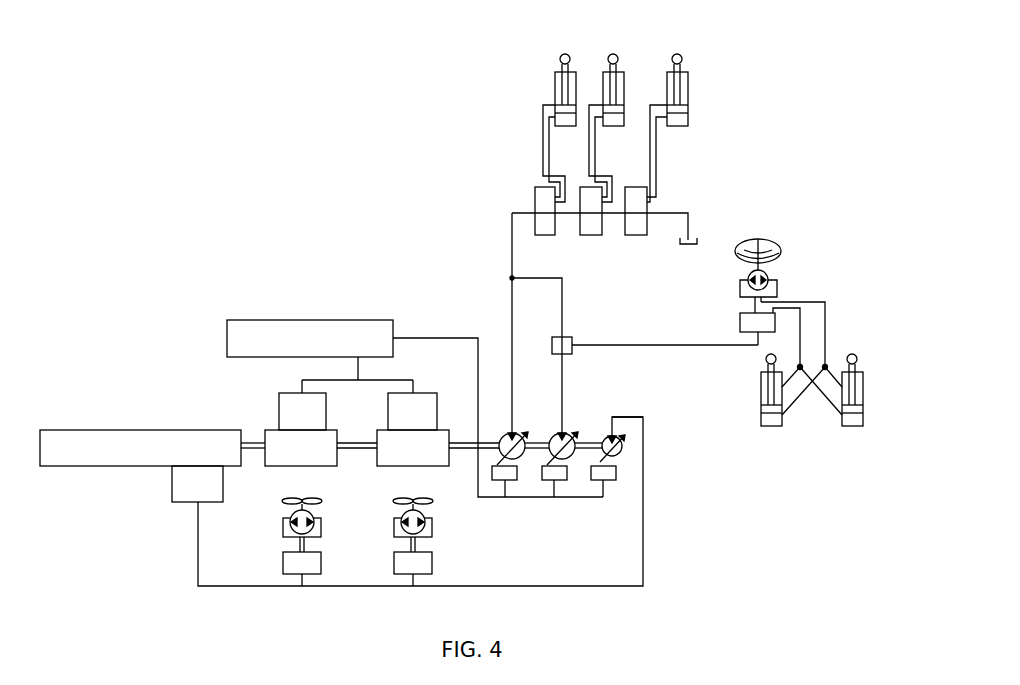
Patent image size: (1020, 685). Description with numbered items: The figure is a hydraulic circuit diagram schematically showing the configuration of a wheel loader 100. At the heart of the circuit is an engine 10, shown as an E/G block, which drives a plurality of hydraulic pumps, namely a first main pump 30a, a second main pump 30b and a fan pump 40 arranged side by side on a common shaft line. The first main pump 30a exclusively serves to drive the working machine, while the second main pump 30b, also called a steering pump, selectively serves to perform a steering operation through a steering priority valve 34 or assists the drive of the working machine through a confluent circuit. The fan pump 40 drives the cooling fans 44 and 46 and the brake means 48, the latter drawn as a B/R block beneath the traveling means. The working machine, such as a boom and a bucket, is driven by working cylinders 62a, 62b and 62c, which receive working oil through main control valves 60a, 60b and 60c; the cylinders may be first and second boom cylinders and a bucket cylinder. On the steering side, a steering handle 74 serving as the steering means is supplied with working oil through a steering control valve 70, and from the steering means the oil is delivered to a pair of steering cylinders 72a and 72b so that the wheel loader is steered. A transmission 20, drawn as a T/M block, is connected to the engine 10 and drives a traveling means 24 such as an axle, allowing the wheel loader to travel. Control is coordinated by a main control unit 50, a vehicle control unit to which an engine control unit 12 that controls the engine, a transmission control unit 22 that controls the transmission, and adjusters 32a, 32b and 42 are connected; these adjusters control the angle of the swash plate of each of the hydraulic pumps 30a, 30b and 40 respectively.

The wheel loader 100 is at (180, 208).
The engine 10 is at (448, 430).
The engine control unit 12 is at (424, 398).
The transmission 20 is at (264, 432).
The transmission control unit 22 is at (279, 410).
The traveling means 24 is at (199, 429).
The first main pump 30a is at (528, 462).
The second main pump 30b is at (577, 462).
The adjuster 32a is at (511, 482).
The adjuster 32b is at (560, 482).
The steering priority valve 34 is at (574, 341).
The fan pump 40 is at (626, 462).
The adjuster 42 is at (610, 482).
The cooling fan 44 is at (432, 502).
The cooling fan 46 is at (320, 502).
The brake means 48 is at (215, 505).
The main control unit 50 is at (356, 320).
The main control valve 60a is at (535, 201).
The main control valve 60b is at (589, 236).
The main control valve 60c is at (636, 236).
The working cylinder 62a is at (572, 62).
The working cylinder 62b is at (620, 62).
The working cylinder 62c is at (683, 62).
The steering control valve 70 is at (740, 323).
The steering cylinder 72a is at (771, 426).
The steering cylinder 72b is at (852, 426).
The steering handle 74 is at (782, 250).